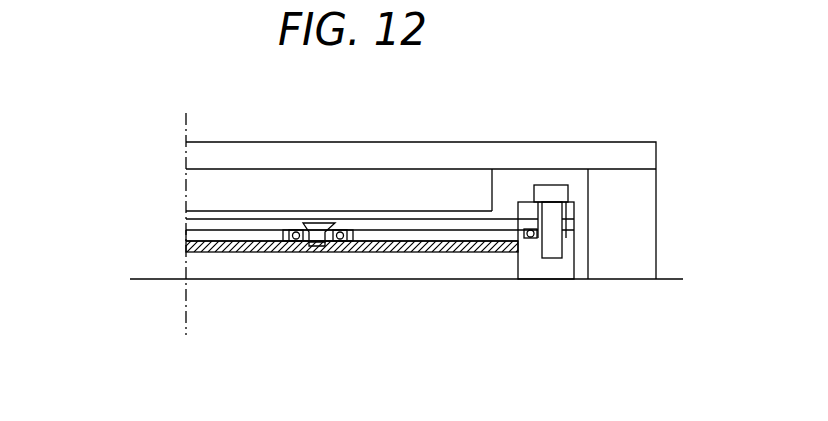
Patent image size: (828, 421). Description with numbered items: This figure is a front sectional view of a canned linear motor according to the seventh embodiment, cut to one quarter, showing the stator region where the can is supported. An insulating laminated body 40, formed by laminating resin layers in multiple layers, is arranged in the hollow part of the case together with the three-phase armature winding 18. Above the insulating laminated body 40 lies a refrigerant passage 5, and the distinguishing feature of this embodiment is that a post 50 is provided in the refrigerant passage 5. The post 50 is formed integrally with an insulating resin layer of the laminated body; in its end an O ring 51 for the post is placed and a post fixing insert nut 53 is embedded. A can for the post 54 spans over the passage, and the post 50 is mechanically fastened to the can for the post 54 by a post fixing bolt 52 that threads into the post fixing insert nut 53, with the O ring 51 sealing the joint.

The refrigerant passage 5 is at (185, 237).
The three-phase armature winding 18 is at (242, 265).
The insulating laminated body 40 is at (187, 252).
The post 50 is at (353, 229).
The O ring for the post 51 is at (298, 228).
The post fixing bolt 52 is at (320, 222).
The post fixing insert nut 53 is at (328, 243).
The can for a post 54 is at (197, 225).